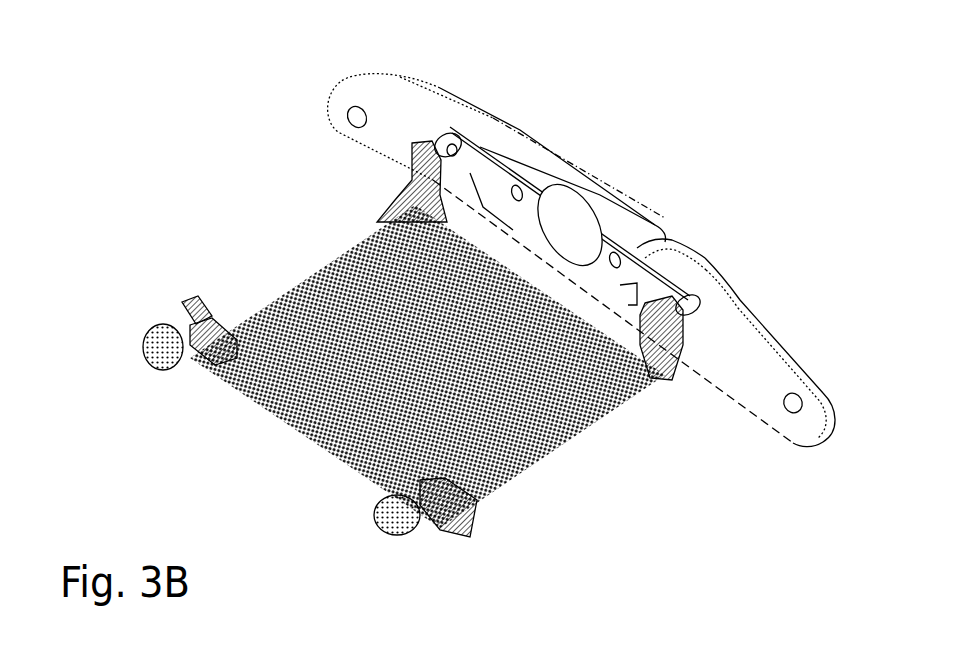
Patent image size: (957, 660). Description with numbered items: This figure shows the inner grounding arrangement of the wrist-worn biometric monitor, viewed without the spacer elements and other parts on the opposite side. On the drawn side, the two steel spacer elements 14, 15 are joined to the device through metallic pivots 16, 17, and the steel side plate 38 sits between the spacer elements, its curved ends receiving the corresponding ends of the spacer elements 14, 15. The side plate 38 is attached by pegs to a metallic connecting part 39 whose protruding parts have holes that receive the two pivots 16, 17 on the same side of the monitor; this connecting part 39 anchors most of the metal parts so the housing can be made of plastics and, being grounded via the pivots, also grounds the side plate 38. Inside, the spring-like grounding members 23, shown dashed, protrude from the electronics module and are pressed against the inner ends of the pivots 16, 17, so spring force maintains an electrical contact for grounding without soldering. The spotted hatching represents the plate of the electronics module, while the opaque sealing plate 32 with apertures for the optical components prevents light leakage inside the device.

The spacer element 14 is at (437, 97).
The spacer element 15 is at (743, 340).
The pivot 16 is at (165, 358).
The pivot 17 is at (388, 516).
The spring member 23 is at (412, 160).
The sealing plate 32 is at (578, 441).
The side plate 38 is at (538, 177).
The connecting part 39 is at (643, 276).